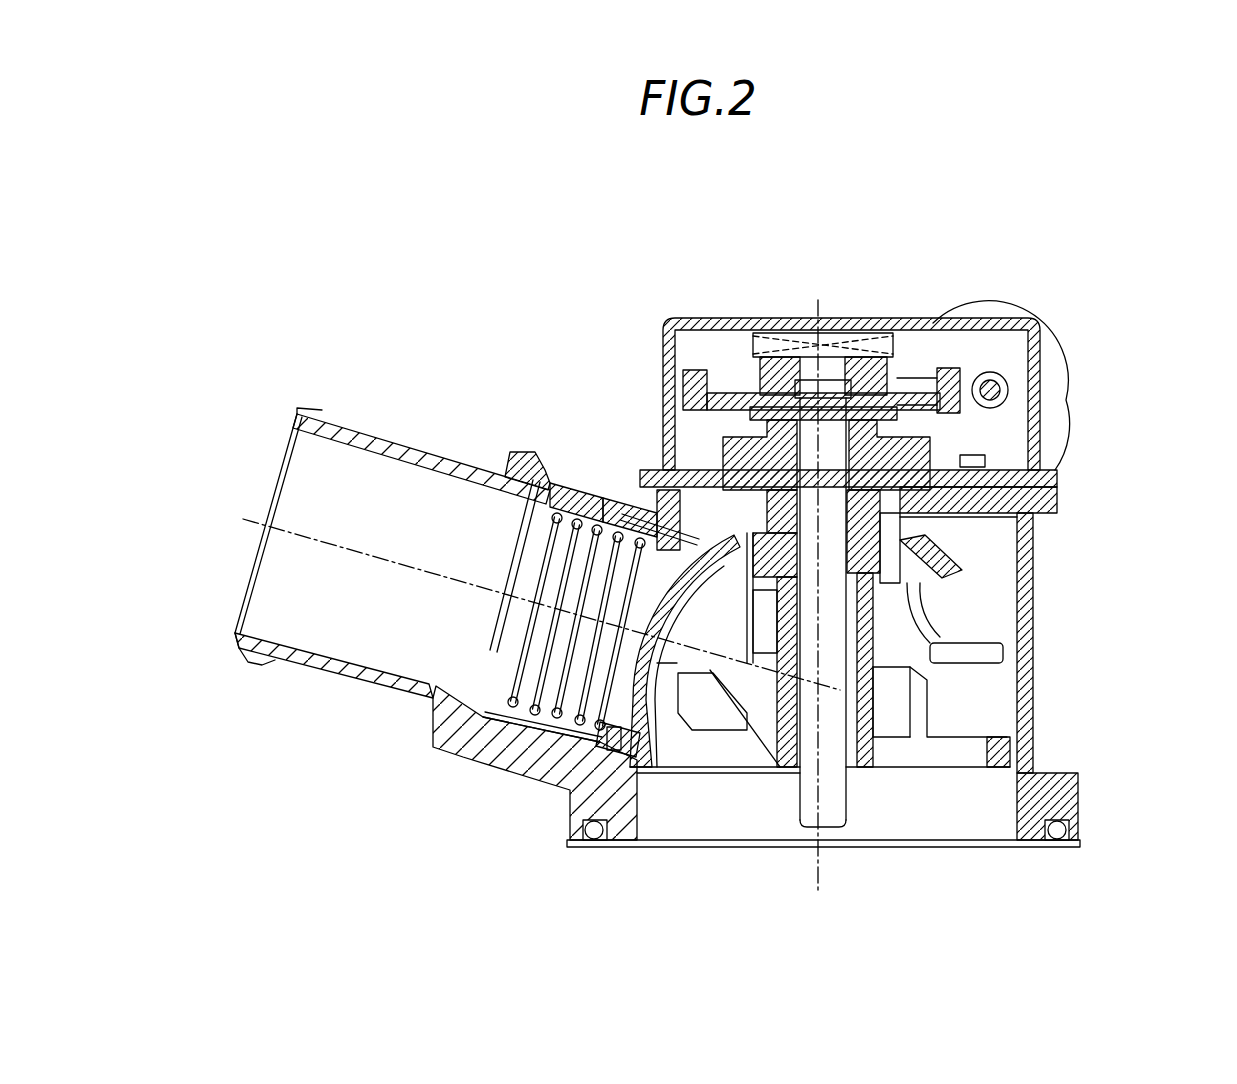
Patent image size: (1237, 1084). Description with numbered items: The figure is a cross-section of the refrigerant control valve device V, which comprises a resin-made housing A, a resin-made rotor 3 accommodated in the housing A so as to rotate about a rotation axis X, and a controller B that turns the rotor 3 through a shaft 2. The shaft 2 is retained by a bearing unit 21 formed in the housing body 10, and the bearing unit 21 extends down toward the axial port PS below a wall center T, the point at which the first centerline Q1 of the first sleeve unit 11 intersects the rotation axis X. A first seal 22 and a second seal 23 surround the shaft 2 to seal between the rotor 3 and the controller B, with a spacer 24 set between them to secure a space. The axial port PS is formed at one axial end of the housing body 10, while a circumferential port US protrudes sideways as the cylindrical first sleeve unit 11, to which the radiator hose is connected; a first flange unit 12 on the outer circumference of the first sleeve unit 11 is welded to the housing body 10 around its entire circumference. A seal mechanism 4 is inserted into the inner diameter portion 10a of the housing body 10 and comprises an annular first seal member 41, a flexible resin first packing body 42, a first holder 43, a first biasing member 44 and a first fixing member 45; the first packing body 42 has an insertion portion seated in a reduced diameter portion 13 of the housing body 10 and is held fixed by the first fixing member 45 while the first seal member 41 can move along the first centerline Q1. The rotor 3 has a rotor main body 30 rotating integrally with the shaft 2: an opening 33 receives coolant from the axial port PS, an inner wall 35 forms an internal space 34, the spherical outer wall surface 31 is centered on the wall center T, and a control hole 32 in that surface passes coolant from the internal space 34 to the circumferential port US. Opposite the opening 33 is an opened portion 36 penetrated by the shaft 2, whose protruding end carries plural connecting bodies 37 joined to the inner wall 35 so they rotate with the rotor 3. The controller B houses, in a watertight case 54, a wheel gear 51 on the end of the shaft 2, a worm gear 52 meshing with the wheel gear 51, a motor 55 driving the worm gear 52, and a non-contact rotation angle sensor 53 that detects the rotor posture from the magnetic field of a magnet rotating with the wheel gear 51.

The shaft 2 is at (827, 800).
The rotor 3 is at (1100, 860).
The seal mechanism 4 is at (520, 398).
The housing body 10 is at (1038, 790).
The inner diameter portion 10a is at (495, 720).
The first sleeve unit 11 is at (393, 440).
The first flange unit 12 is at (430, 727).
The reduced diameter portion 13 is at (605, 690).
The bearing unit 21 is at (832, 692).
The first seal 22 is at (887, 557).
The second seal 23 is at (1003, 520).
The spacer 24 is at (897, 520).
The rotor main body 30 is at (1040, 838).
The outer wall surface 31 is at (622, 712).
The control hole 32 is at (903, 567).
The opening 33 is at (697, 775).
The internal space 34 is at (689, 708).
The inner wall 35 is at (673, 752).
The opened portion 36 is at (935, 545).
The connecting bodies 37 is at (747, 722).
The first seal member 41 is at (655, 525).
The first packing body 42 is at (668, 520).
The first holder 43 is at (625, 518).
The first biasing member 44 is at (565, 500).
The first fixing member 45 is at (525, 495).
The wheel gear 51 is at (942, 375).
The worm gear 52 is at (1000, 380).
The rotation angle sensor 53 is at (867, 330).
The case 54 is at (838, 330).
The motor 55 is at (1062, 345).
The housing A is at (1100, 718).
The controller B is at (985, 248).
The refrigerant control valve device V is at (1095, 225).
The rotation axis X is at (812, 316).
The wall center T is at (817, 690).
The axial port PS is at (978, 853).
The first centerline Q1 is at (246, 518).
The circumferential port US is at (362, 335).